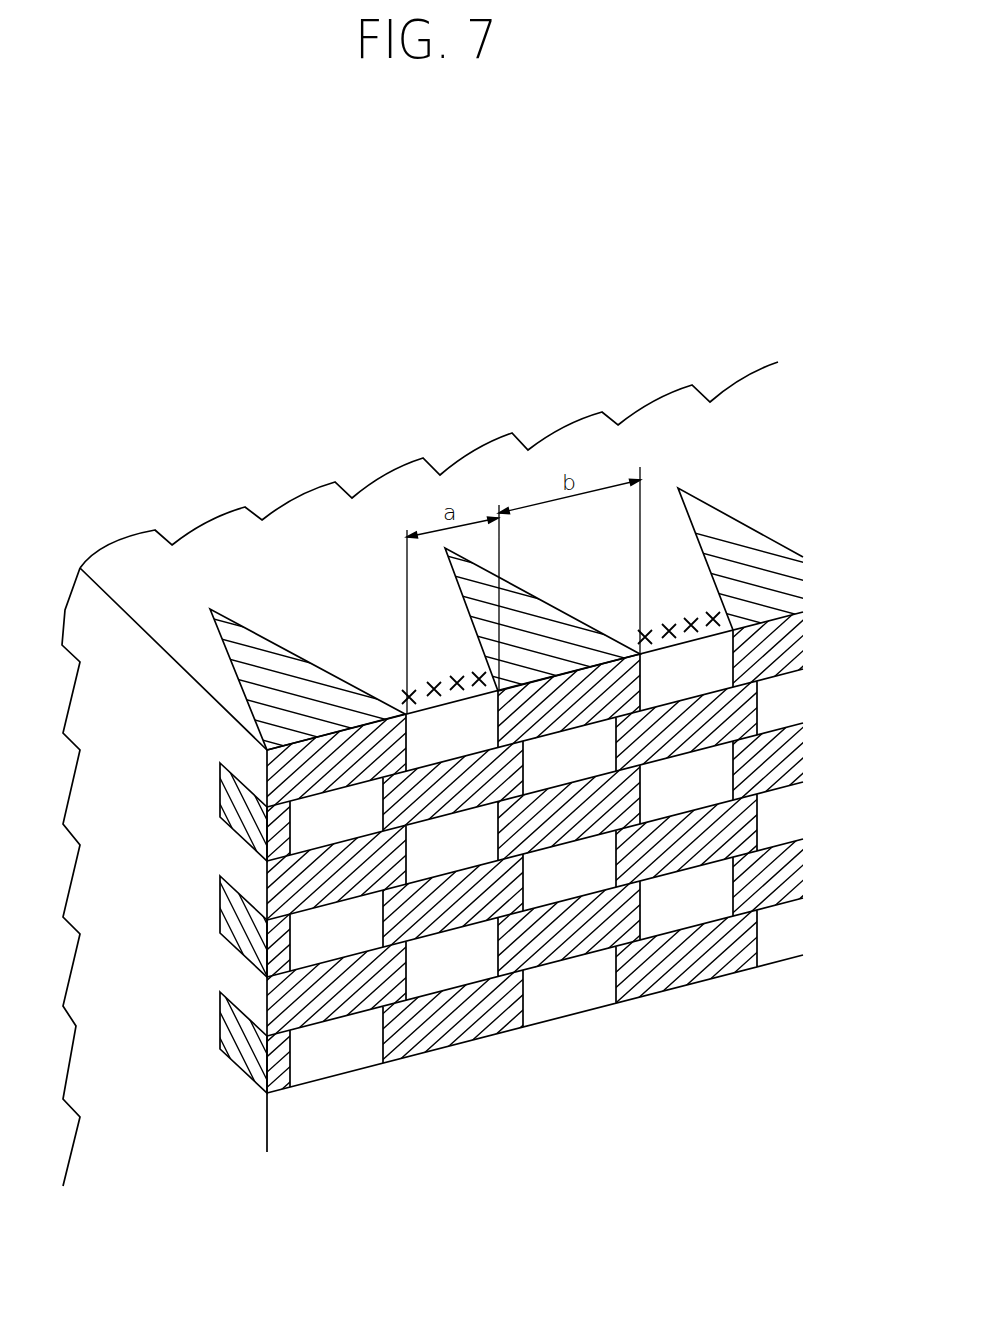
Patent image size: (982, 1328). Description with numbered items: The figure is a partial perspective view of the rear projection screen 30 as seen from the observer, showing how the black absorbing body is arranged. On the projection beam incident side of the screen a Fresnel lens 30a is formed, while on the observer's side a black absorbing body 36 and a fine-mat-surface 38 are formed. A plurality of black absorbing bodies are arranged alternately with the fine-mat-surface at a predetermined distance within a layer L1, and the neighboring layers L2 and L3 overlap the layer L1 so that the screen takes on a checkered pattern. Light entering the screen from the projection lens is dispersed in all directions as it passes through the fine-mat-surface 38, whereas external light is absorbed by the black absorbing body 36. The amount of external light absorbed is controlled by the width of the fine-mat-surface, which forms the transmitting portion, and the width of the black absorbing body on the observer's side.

The rear projection screen 30 is at (134, 514).
The Fresnel lens 30a is at (467, 453).
The black absorbing body 36 is at (242, 653).
The fine-mat-surface 38 is at (683, 605).
The layer L1 is at (790, 698).
The neighboring layer L2 is at (797, 643).
The neighboring layer L3 is at (800, 753).